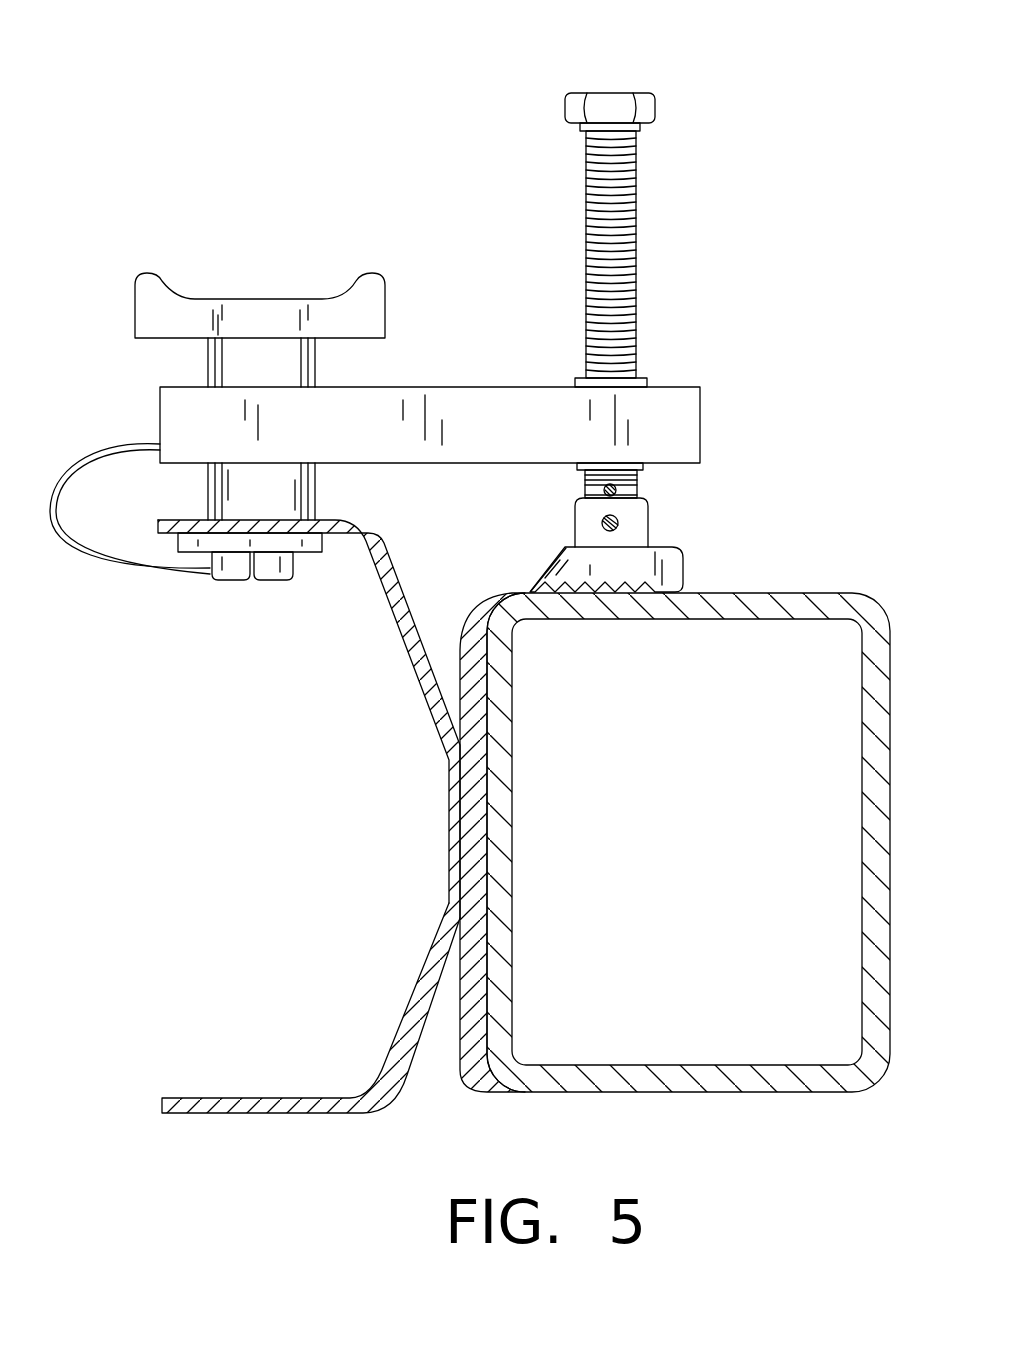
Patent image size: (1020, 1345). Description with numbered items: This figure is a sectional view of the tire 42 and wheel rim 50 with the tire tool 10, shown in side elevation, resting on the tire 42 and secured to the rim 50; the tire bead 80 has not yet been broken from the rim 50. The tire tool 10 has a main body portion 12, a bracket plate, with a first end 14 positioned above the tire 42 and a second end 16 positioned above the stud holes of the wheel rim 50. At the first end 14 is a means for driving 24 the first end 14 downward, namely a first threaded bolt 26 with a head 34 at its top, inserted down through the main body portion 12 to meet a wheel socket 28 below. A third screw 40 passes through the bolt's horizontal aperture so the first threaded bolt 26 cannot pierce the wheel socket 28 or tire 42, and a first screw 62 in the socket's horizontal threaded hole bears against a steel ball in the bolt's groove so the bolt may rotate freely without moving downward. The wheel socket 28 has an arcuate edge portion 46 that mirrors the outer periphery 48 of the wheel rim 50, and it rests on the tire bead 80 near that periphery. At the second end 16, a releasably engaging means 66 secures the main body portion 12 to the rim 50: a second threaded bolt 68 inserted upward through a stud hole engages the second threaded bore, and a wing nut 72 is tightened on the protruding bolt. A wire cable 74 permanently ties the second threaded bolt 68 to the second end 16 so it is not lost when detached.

The tire tool 10 is at (702, 325).
The main body portion 12 is at (450, 387).
The first end 14 is at (703, 385).
The second end 16 is at (158, 390).
The means for driving 24 is at (687, 160).
The first threaded bolt 26 is at (622, 207).
The wheel socket 28 is at (677, 568).
The head 34 is at (653, 110).
The third screw 40 is at (613, 492).
The tire 42 is at (745, 607).
The arcuate edge portion 46 is at (558, 557).
The outer periphery 48 is at (321, 816).
The wheel rim 50 is at (420, 667).
The first screw 62 is at (618, 523).
The releasably engaging means 66 is at (293, 207).
The second threaded bolt 68 is at (267, 570).
The wing nut 72 is at (148, 283).
The wire cable 74 is at (120, 577).
The tire bead 80 is at (518, 590).